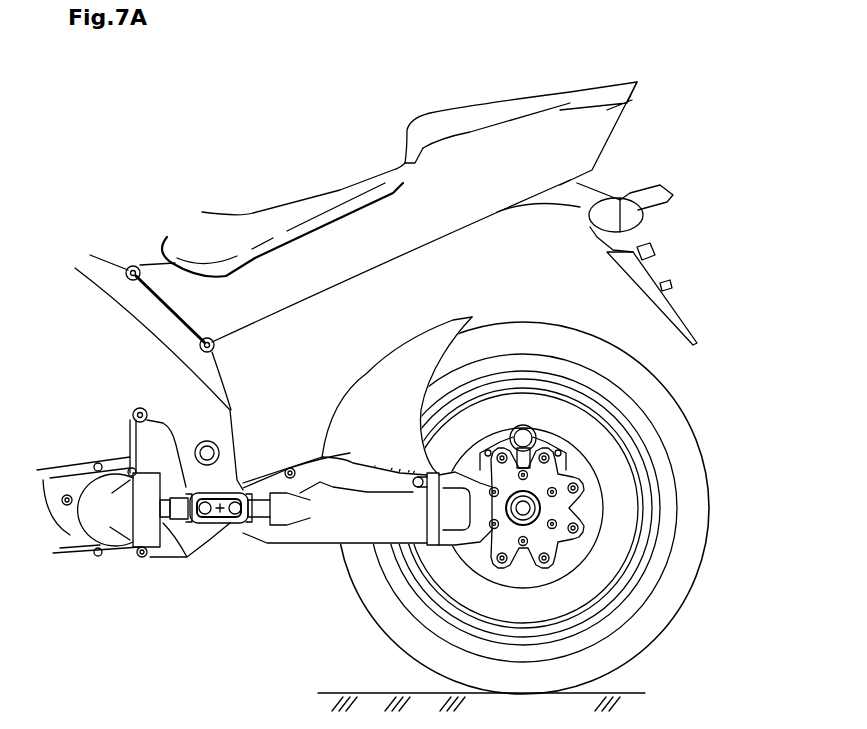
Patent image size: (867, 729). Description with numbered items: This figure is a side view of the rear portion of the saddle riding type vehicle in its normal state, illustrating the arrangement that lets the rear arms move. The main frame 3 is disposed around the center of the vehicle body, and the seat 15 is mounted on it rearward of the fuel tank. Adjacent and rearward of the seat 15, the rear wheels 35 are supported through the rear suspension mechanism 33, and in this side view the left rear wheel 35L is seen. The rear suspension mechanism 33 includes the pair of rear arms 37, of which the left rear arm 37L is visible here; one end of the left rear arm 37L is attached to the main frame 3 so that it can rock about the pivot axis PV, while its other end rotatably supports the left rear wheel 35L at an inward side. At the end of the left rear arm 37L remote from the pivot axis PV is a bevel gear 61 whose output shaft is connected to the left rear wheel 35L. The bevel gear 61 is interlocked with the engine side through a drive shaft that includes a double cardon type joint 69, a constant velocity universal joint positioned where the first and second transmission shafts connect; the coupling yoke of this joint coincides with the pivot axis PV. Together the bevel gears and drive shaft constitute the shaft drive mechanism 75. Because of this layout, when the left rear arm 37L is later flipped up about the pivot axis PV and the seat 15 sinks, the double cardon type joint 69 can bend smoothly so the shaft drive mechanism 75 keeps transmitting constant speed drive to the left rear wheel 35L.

The main frame 3 is at (100, 270).
The seat 15 is at (255, 212).
The rear suspension mechanism 33 is at (405, 316).
The rear wheels 35 is at (741, 405).
The left rear wheel 35L is at (693, 453).
The rear arms 37 is at (315, 603).
The left rear arm 37L is at (314, 548).
The bevel gear 61 is at (565, 476).
The double cardon type joint 69 is at (203, 527).
The pivot axis PV is at (222, 524).
The shaft drive mechanism 75 is at (261, 621).